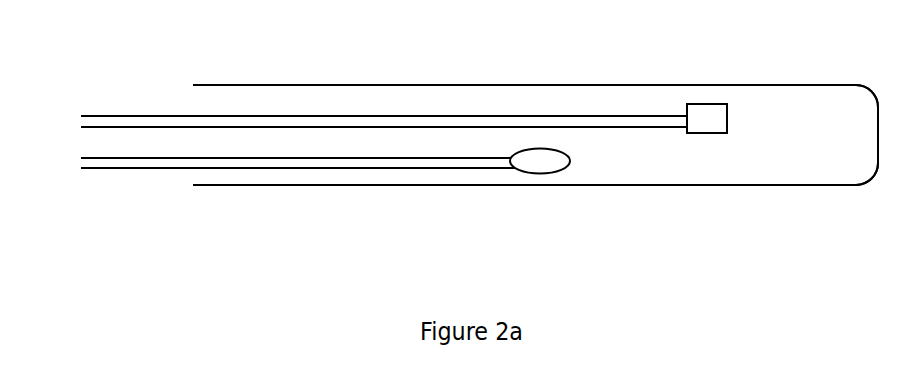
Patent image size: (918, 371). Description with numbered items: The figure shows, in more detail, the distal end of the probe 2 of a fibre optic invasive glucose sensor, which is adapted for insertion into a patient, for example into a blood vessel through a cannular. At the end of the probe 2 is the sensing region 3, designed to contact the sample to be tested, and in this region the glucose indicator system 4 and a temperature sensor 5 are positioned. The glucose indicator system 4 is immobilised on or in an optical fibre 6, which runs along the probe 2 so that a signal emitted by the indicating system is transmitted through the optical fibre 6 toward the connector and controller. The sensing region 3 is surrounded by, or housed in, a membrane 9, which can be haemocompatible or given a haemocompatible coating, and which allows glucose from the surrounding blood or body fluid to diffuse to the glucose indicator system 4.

The probe 2 is at (479, 135).
The sensing region 3 is at (800, 62).
The glucose indicator system 4 is at (702, 125).
The temperature sensor 5 is at (542, 163).
The optical fibre 6 is at (321, 115).
The membrane 9 is at (559, 85).